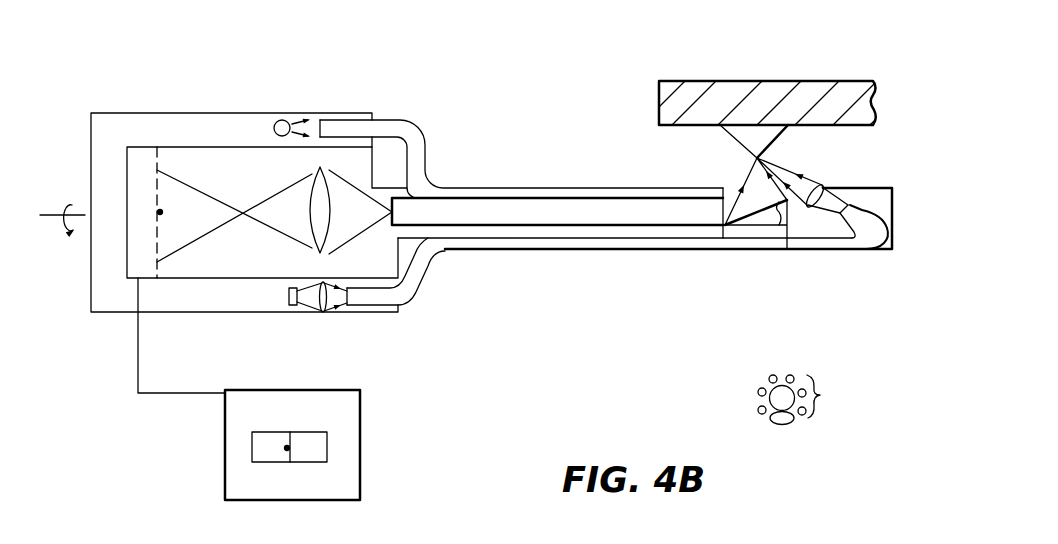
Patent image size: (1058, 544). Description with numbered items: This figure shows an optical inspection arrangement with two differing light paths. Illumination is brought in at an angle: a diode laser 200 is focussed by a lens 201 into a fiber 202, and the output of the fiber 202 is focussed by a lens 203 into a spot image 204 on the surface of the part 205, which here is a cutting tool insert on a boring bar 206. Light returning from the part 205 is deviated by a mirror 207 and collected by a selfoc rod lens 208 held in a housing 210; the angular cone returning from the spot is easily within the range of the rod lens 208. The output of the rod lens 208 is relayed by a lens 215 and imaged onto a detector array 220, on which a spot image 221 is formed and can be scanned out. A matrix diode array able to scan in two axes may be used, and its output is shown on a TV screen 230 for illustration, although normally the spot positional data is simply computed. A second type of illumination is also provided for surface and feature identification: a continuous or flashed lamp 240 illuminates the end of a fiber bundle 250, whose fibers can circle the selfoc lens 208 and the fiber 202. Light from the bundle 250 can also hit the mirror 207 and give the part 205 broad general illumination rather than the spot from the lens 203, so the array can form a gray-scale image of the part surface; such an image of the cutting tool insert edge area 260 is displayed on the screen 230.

The diode laser 200 is at (289, 294).
The lens 201 is at (324, 312).
The fiber 202 is at (413, 297).
The lens 203 is at (821, 187).
The spot image 204 is at (752, 156).
The part 205 is at (779, 139).
The boring bar 206 is at (848, 87).
The mirror 207 is at (787, 194).
The selfoc rod lens 208 is at (680, 210).
The housing 210 is at (560, 188).
The lens 215 is at (305, 170).
The detector array 220 is at (138, 147).
The spot image 221 is at (162, 212).
The TV screen 230 is at (361, 458).
The lamp 240 is at (282, 120).
The fiber bundle 250 is at (421, 126).
The cutting tool insert edge area 260 is at (327, 438).